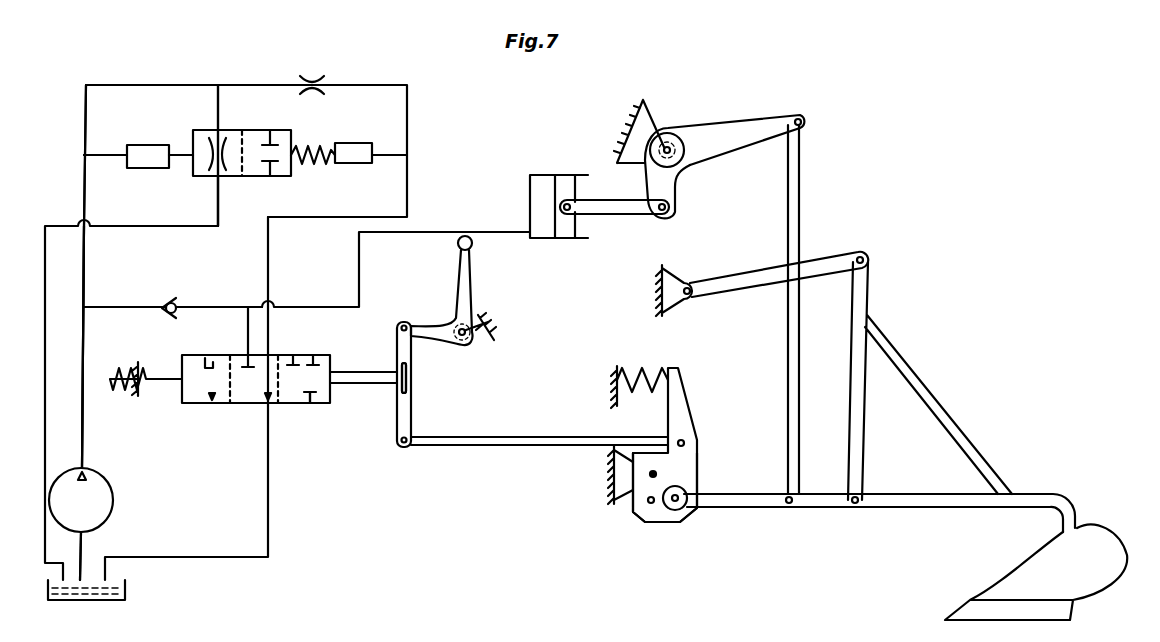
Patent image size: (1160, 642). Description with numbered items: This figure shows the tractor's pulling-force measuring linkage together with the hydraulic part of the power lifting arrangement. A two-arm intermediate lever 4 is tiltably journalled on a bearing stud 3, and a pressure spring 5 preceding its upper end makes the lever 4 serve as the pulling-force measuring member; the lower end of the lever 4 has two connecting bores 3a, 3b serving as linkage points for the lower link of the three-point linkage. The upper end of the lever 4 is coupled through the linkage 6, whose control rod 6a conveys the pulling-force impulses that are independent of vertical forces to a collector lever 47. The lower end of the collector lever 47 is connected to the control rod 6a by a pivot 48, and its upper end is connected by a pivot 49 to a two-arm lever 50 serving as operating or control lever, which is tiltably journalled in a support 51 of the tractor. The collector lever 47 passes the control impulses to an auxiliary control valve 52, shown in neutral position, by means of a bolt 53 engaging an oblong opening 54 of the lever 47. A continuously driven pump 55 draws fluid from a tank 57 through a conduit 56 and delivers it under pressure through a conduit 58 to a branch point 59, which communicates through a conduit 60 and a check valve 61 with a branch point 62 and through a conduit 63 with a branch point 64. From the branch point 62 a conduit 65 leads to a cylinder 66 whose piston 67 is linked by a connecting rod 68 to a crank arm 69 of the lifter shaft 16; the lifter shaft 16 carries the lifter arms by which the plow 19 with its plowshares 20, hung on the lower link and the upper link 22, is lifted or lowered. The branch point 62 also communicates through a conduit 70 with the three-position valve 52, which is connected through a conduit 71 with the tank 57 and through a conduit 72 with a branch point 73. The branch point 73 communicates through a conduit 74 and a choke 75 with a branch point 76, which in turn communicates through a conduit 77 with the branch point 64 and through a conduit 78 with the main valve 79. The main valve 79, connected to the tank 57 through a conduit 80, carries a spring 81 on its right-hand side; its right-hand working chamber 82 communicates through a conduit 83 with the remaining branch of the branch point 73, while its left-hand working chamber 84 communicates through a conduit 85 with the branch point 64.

The bearing stud 3 is at (656, 474).
The connecting bore 3a is at (677, 502).
The connecting bore 3b is at (651, 503).
The two-arm intermediate lever 4 is at (685, 418).
The pressure spring 5 is at (648, 368).
The linkage arm 6 is at (558, 445).
The control rod 6a is at (497, 437).
The lifter shaft 16 is at (668, 140).
The plow 19 is at (945, 420).
The plowshares 20 is at (1105, 538).
The upper link 22 is at (825, 260).
The collector lever 47 is at (404, 412).
The pivot 48 is at (404, 447).
The pivot 49 is at (404, 322).
The two-arm lever 50 is at (467, 290).
The support 51 is at (480, 338).
The auxiliary control valve 52 is at (310, 403).
The bolt 53 is at (408, 372).
The oblong opening 54 is at (408, 385).
The pump 55 is at (113, 500).
The conduit 56 is at (80, 545).
The tank 57 is at (125, 590).
The conduit 58 is at (83, 420).
The branch point 59 is at (95, 307).
The conduit 60 is at (140, 307).
The check valve 61 is at (173, 300).
The branch point 62 is at (248, 307).
The conduit 63 is at (84, 203).
The branch point 64 is at (84, 155).
The conduit 65 is at (313, 307).
The cylinder 66 is at (530, 192).
The piston 67 is at (567, 180).
The connecting rod 68 is at (617, 214).
The crank arm 69 is at (677, 180).
The conduit 70 is at (248, 330).
The conduit 71 is at (268, 474).
The conduit 72 is at (268, 265).
The branch point 73 is at (407, 155).
The conduit 74 is at (385, 85).
The choke 75 is at (313, 78).
The branch point 76 is at (218, 85).
The conduit 77 is at (140, 85).
The conduit 78 is at (218, 110).
The main valve 79 is at (258, 176).
The conduit 80 is at (218, 210).
The spring 81 is at (311, 145).
The right-hand working chamber 82 is at (352, 163).
The conduit 83 is at (388, 155).
The left-hand working chamber 84 is at (145, 168).
The conduit 85 is at (107, 155).